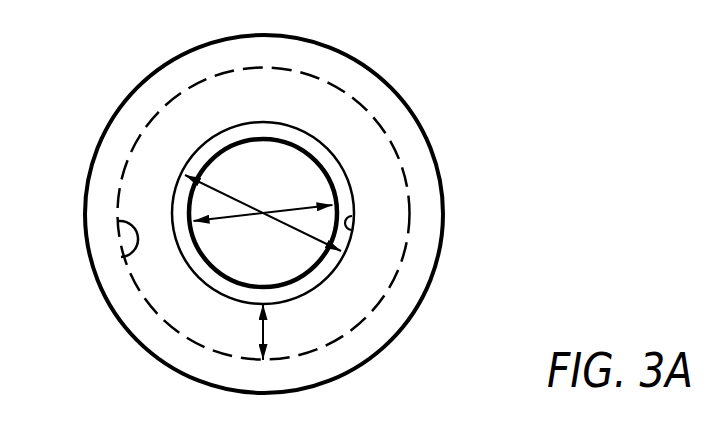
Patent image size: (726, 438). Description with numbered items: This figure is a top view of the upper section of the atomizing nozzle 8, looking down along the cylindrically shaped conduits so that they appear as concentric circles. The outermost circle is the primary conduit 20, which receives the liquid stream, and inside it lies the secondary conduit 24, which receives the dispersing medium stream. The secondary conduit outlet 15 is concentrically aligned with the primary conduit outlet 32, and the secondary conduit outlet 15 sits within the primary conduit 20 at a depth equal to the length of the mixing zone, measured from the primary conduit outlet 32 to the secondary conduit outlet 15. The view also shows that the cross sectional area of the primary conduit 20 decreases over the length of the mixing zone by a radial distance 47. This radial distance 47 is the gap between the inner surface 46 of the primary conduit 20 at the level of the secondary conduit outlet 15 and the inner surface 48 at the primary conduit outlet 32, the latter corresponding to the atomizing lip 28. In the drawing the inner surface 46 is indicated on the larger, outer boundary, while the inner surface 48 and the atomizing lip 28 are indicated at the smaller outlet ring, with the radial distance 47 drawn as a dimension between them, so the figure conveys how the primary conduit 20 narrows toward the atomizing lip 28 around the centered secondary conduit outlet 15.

The atomizing nozzle 8 is at (556, 98).
The primary conduit 20 is at (122, 330).
The secondary conduit 24 is at (147, 158).
The inner surface of the primary conduit at the secondary conduit outlet 46 is at (120, 258).
The inner surface at the primary conduit outlet 48 is at (354, 230).
The atomizing lip 28 is at (318, 274).
The primary conduit outlet 32 is at (240, 202).
The secondary conduit outlet 15 is at (297, 207).
The radial distance 47 is at (257, 330).